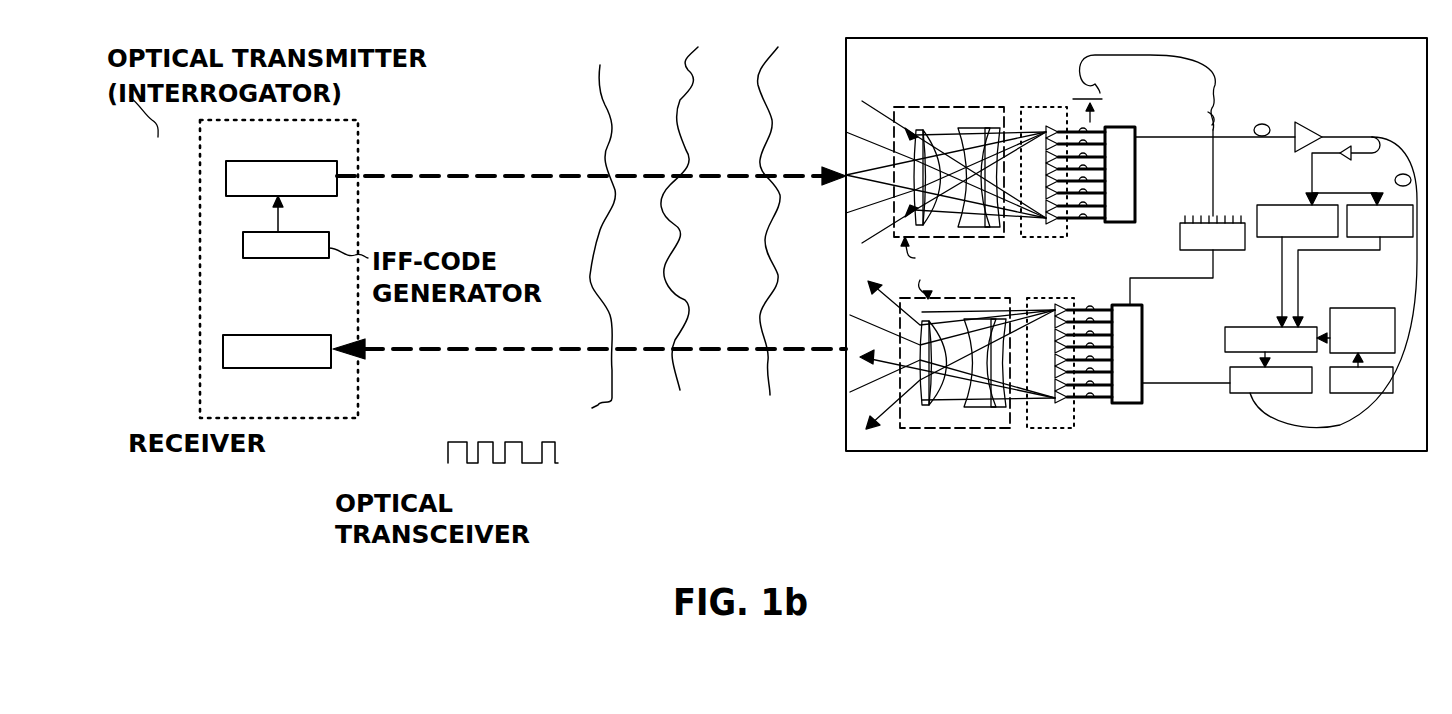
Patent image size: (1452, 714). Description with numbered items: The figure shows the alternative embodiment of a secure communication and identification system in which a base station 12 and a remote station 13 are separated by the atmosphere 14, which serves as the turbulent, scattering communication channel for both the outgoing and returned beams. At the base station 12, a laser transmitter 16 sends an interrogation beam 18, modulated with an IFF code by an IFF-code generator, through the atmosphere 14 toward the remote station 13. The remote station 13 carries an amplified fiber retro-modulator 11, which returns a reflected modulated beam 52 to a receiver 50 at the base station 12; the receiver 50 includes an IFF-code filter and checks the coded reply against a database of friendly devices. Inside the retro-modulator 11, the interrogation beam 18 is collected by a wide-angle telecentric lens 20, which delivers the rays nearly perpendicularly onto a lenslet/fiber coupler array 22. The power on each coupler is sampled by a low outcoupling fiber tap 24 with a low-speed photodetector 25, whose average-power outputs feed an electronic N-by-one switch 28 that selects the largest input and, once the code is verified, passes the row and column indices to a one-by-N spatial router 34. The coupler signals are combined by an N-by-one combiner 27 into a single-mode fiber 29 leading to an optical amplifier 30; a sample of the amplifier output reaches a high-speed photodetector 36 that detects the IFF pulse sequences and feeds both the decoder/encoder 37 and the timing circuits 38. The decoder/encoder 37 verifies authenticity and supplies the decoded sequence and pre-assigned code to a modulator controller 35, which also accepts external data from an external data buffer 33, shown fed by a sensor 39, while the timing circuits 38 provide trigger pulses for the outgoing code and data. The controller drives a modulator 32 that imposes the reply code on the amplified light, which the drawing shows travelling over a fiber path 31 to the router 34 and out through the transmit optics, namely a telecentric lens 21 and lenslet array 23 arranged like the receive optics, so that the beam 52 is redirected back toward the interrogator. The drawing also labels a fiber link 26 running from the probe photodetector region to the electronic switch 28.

The amplified fiber retro-modulator 11 is at (970, 47).
The base station 12 is at (322, 418).
The remote station 13 is at (1103, 38).
The atmosphere 14 is at (600, 66).
The transmitter 16 is at (226, 185).
The interrogation beam 18 is at (418, 178).
The wide-angle telecentric lens 20 is at (925, 107).
The transmit optics 21 is at (965, 428).
The lenslet/fiber coupler array 22 is at (1032, 107).
The lenslet array 23 is at (1062, 238).
The low outcoupling fiber tap 24 is at (1100, 94).
The low-speed photodetector 25 is at (1146, 92).
The probe fiber loop 26 is at (1210, 66).
The N×1 combiner 27 is at (1135, 142).
The electronic switch 28 is at (1222, 218).
The single-mode fiber 29 is at (1252, 130).
The optical amplifier 30 is at (1312, 130).
The return fiber loop 31 is at (1417, 288).
The modulator 32 is at (1230, 378).
The external data buffer 33 is at (1352, 308).
The spatial router 34 is at (1190, 414).
The modulator controller 35 is at (1225, 340).
The high speed photodetector 36 is at (1342, 155).
The decoder/encoder 37 is at (1296, 237).
The timing circuit 38 is at (1385, 237).
The sensor 39 is at (1345, 393).
The receiver 50 is at (223, 355).
The reflected modulated beam 52 is at (538, 349).